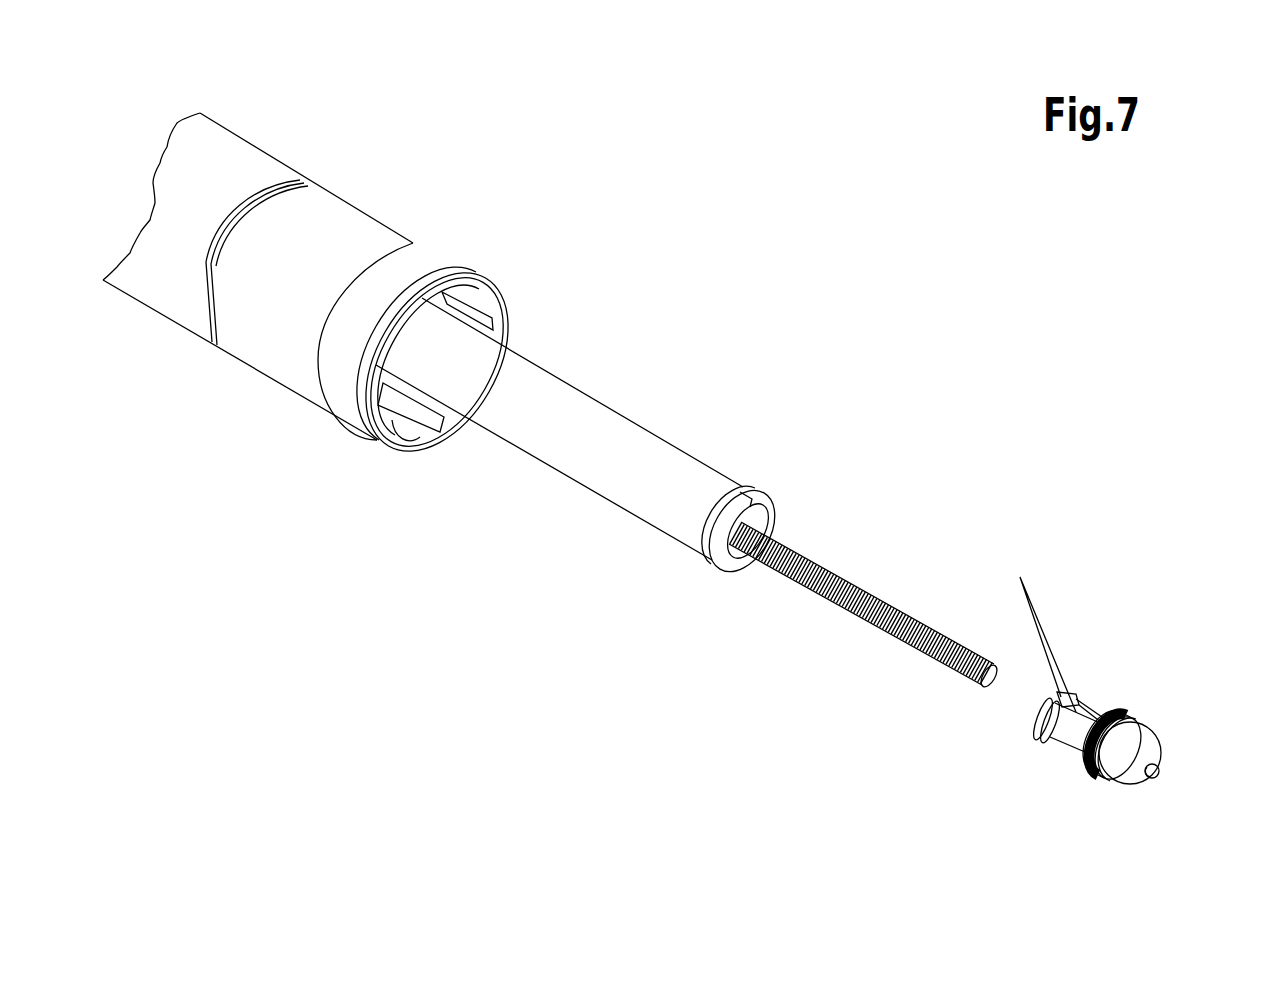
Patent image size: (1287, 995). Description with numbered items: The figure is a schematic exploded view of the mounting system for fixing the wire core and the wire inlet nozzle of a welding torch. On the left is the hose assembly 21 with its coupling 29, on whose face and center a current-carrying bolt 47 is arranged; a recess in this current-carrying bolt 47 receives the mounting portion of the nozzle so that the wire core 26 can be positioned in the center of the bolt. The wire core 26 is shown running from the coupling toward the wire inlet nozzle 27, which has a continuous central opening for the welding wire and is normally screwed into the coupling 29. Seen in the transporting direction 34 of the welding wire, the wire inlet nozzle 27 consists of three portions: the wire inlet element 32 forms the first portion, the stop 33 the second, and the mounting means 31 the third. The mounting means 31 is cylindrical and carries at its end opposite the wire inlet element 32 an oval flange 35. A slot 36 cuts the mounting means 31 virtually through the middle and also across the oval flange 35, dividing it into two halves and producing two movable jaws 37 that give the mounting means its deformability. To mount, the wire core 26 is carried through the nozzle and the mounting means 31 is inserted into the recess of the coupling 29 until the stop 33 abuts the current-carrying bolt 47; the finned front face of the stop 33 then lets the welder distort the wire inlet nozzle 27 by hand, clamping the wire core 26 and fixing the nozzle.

The hose assembly 21 is at (150, 245).
The wire core 26 is at (847, 575).
The wire inlet nozzle 27 is at (1139, 612).
The coupling 29 is at (314, 588).
The mounting means 31 is at (1087, 750).
The wire inlet element 32 is at (1150, 748).
The stop 33 is at (1106, 781).
The transporting direction 34 is at (742, 650).
The oval flange 35 is at (1040, 723).
The slot 36 is at (1078, 706).
The jaws 37 is at (1037, 626).
The current-carrying bolt 47 is at (617, 437).